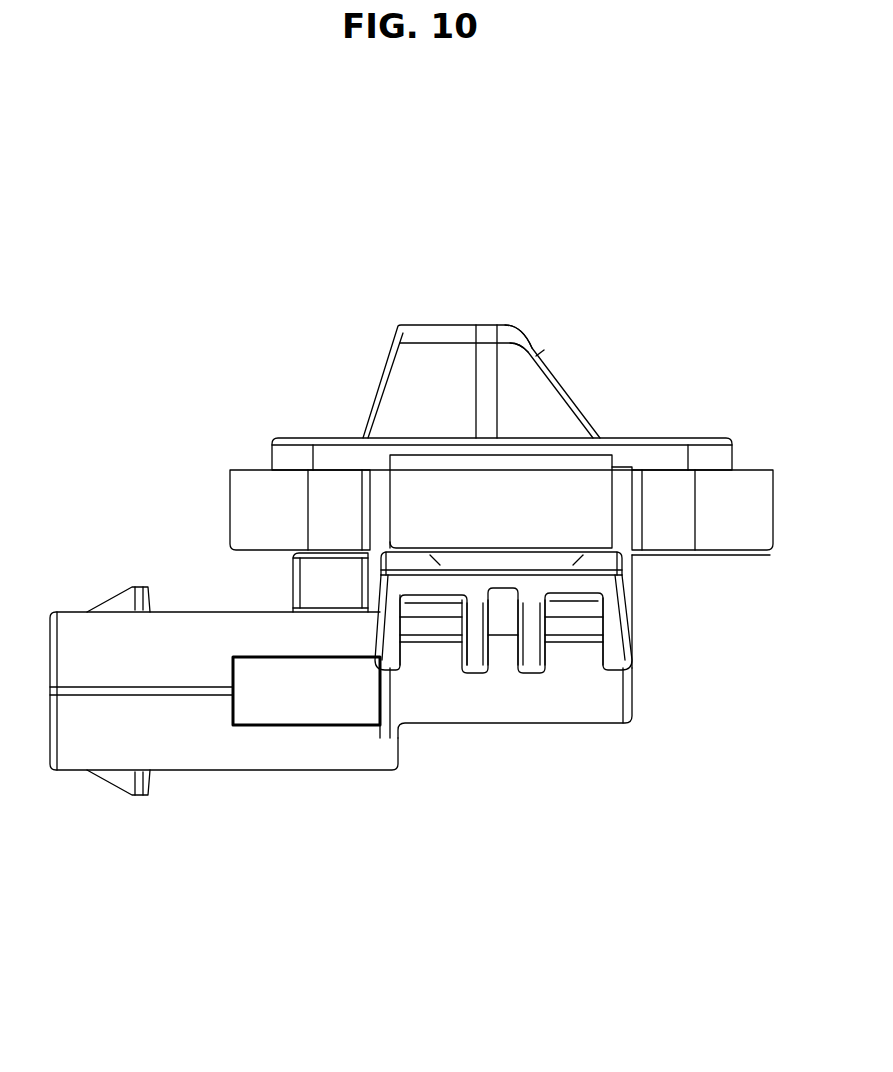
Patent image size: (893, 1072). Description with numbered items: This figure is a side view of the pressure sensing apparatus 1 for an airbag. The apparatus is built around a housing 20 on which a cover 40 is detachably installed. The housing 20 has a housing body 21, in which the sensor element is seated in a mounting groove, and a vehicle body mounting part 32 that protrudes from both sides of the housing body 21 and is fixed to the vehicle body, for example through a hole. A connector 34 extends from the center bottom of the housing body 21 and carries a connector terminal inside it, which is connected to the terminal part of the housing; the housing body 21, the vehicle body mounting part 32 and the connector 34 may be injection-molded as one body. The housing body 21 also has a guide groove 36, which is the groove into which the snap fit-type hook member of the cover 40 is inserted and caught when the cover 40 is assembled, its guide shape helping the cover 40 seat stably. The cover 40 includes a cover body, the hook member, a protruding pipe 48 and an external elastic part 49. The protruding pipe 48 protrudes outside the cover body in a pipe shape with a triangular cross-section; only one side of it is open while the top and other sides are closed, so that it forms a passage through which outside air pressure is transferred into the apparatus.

The pressure sensing apparatus 1 is at (497, 247).
The cover 40 is at (417, 303).
The protruding pipe 48 is at (515, 335).
The vehicle body mounting part 32 is at (568, 475).
The external elastic part 49 is at (335, 452).
The housing body 21 is at (643, 640).
The guide groove 36 is at (425, 625).
The housing 20 is at (550, 770).
The connector 34 is at (197, 792).